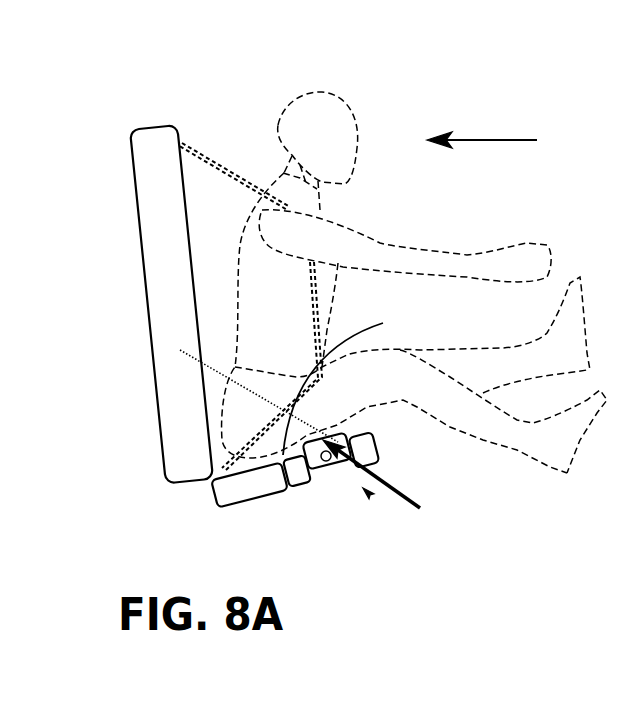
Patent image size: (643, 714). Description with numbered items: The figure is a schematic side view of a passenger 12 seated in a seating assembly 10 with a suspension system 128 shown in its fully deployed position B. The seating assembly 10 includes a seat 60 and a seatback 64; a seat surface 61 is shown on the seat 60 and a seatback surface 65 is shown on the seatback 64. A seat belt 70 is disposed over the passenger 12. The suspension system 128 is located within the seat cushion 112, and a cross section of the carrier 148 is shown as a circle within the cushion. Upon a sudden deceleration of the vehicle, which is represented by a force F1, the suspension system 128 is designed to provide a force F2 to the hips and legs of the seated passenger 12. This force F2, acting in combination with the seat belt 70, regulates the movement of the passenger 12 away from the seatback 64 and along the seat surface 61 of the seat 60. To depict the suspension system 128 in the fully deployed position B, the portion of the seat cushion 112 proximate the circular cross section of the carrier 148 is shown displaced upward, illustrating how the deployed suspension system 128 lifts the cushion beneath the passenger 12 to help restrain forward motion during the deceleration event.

The seating assembly 10 is at (110, 289).
The passenger 12 is at (328, 120).
The seat 60 is at (248, 497).
The seat surface 61 is at (409, 336).
The seatback 64 is at (152, 215).
The seatback surface 65 is at (182, 143).
The seat belt 70 is at (214, 160).
The seat cushion 112 is at (298, 478).
The suspension system 128 is at (252, 478).
The carrier 148 is at (320, 472).
The force F1 is at (496, 145).
The force F2 is at (384, 492).
The fully deployed position B is at (370, 495).